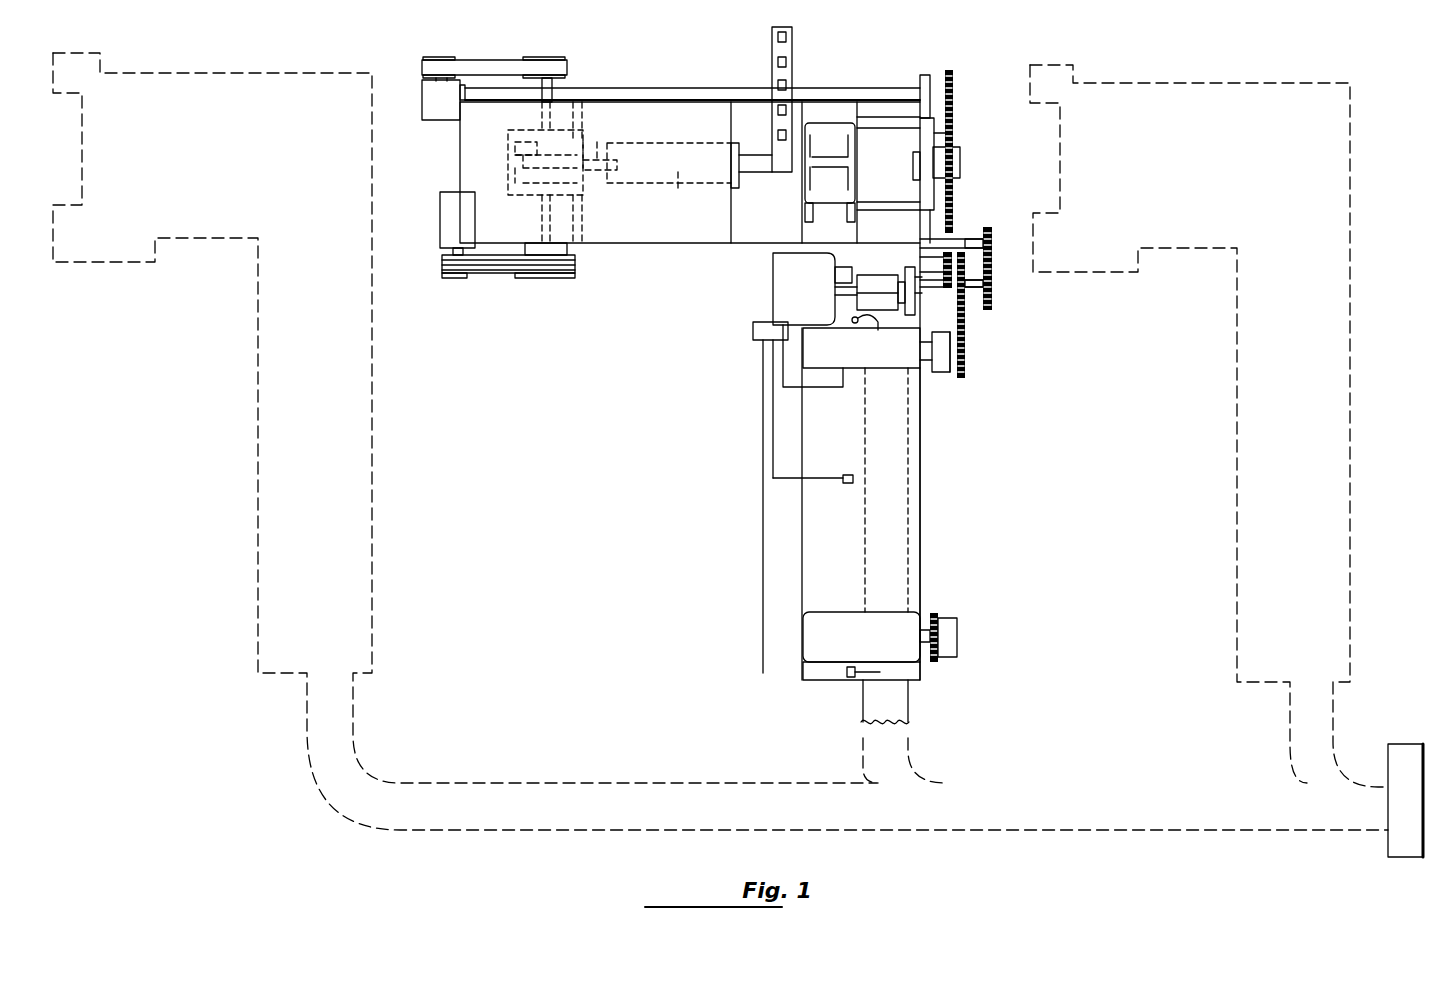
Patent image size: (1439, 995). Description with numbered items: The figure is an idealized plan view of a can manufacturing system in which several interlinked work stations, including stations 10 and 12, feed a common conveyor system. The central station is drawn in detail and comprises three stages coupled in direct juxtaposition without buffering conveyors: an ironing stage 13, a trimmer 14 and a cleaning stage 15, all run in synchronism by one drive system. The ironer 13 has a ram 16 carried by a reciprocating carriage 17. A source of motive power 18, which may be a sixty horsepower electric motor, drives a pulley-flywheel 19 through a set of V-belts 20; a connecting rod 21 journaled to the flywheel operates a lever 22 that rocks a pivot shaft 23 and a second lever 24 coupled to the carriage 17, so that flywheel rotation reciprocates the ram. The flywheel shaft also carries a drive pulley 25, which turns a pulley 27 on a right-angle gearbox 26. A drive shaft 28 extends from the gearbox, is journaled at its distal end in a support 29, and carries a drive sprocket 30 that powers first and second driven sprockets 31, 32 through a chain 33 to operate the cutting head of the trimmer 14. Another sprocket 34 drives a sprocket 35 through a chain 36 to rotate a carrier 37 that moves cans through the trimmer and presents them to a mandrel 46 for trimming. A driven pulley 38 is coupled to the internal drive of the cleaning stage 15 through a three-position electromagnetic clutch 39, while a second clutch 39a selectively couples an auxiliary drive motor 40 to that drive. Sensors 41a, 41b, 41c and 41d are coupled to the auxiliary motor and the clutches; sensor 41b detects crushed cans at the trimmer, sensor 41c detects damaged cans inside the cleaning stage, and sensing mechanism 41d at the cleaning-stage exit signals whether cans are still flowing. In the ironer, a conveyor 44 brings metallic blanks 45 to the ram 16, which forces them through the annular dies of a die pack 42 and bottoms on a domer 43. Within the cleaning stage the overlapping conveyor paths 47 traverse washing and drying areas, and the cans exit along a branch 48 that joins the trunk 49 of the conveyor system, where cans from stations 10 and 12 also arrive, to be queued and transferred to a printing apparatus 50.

The work station 10 is at (215, 163).
The work station 12 is at (1193, 175).
The ironing stage 13 is at (638, 73).
The trimmer 14 is at (772, 282).
The cleaning stage 15 is at (926, 539).
The ram 16 is at (763, 172).
The reciprocating carriage 17 is at (683, 194).
The source of motive power 18 is at (455, 210).
The pulley-flywheel 19 is at (560, 280).
The V-belts 20 is at (490, 272).
The connecting rod 21 is at (532, 127).
The lever 22 is at (592, 142).
The pivot shaft 23 is at (582, 217).
The second lever 24 is at (615, 150).
The drive pulley 25 is at (550, 59).
The right-angle gearbox 26 is at (430, 108).
The pulley 27 is at (462, 60).
The drive shaft 28 is at (678, 98).
The support 29 is at (928, 73).
The drive sprocket 30 is at (953, 75).
The first driven sprocket 31 is at (948, 250).
The second driven sprocket 32 is at (964, 250).
The chain 33 is at (953, 133).
The sprocket 34 is at (992, 238).
The sprocket 35 is at (992, 304).
The guide 36 is at (995, 263).
The carrier 37 is at (875, 283).
The driven pulley 38 is at (966, 342).
The clutching mechanism 39 is at (948, 374).
The second clutch 39a is at (960, 640).
The auxiliary drive motor 40 is at (823, 633).
The sensor 41a is at (915, 180).
The second sensor 41b is at (851, 351).
The sensor 41c is at (848, 488).
The sensing mechanism 41d is at (853, 680).
The die pack 42 is at (830, 133).
The domer 43 is at (958, 162).
The conveyor 44 is at (772, 40).
The metallic blanks 45 is at (792, 60).
The mandrel 46 is at (838, 275).
The conveyor paths 47 is at (898, 481).
The branch 48 is at (895, 707).
The trunk 49 is at (1048, 798).
The printing apparatus 50 is at (1396, 845).